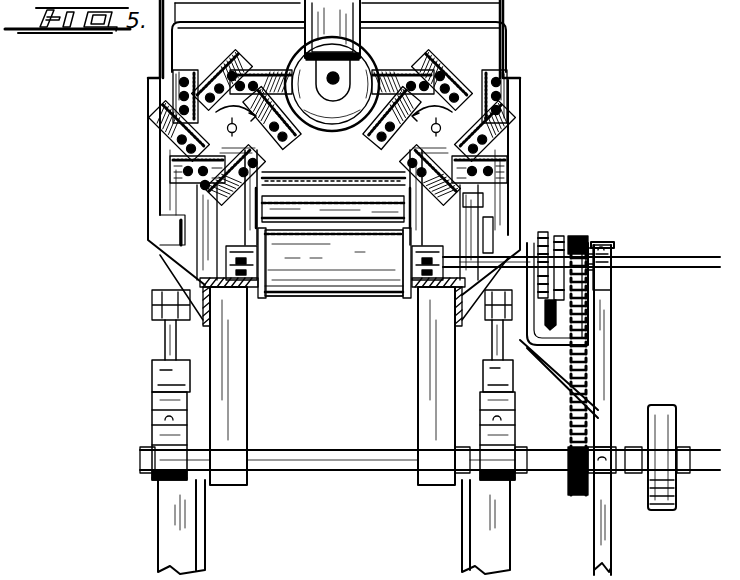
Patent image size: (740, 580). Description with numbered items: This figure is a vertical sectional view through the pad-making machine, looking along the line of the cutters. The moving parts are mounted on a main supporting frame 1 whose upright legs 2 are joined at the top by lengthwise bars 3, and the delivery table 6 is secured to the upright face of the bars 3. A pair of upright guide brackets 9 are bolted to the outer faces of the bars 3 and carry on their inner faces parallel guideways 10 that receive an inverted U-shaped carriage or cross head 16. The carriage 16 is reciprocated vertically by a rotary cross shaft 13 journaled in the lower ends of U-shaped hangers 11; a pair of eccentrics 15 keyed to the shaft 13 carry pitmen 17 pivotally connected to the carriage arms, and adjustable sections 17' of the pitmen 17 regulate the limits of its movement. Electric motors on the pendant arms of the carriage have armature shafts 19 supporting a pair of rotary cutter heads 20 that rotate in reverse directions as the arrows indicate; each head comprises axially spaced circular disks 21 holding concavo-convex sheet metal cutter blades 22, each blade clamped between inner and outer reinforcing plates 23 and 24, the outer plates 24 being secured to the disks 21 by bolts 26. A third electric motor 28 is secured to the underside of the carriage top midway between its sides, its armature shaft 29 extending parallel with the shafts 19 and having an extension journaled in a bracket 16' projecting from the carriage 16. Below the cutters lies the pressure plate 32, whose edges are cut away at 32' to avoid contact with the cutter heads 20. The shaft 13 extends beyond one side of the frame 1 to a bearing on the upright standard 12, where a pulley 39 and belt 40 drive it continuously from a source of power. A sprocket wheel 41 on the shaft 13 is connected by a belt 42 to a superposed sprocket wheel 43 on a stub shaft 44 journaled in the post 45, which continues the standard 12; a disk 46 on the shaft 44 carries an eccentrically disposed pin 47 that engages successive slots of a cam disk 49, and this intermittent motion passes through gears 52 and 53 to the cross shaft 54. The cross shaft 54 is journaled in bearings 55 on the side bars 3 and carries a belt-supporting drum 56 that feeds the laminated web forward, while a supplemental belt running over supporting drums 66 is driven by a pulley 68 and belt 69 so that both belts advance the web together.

The main supporting frame 1 is at (165, 325).
The upright legs 2 is at (500, 526).
The lengthwise bars 3 is at (436, 290).
The delivery table 6 is at (352, 240).
The upright guide brackets 9 is at (520, 192).
The guideways 10 is at (675, 262).
The U-shaped hangers 11 is at (418, 407).
The upright standard 12 is at (612, 545).
The rotary cross shaft 13 is at (333, 452).
The eccentrics 15 is at (515, 422).
The carriage or cross head 16 is at (341, 39).
The bracket 16' is at (332, 30).
The pitmen 17 is at (334, 373).
The adjustable sections 17' is at (317, 296).
The armature shafts 19 is at (446, 128).
The rotary cutter heads 20 is at (508, 100).
The circular disks 21 is at (334, 143).
The cutter blades 22 is at (432, 58).
The inner clamping and reinforcing plates 23 is at (500, 150).
The outer clamping and reinforcing plates 24 is at (334, 120).
The bolts 26 is at (205, 190).
The third electric motor 28 is at (332, 131).
The armature shaft 29 is at (333, 84).
The pressure plate 32 is at (333, 200).
The cut-away portions 32' is at (333, 203).
The pulley 39 is at (676, 470).
The belt 40 is at (676, 443).
The sprocket wheel 41 is at (575, 498).
The belt 42 is at (571, 415).
The superposed sprocket wheel 43 is at (590, 248).
The stub shaft 44 is at (590, 268).
The post 45 is at (606, 298).
The disk 46 is at (578, 236).
The pin 47 is at (560, 236).
The cam disk 49 is at (560, 315).
The gear 52 is at (552, 326).
The gear 53 is at (545, 230).
The cross shaft 54 is at (478, 285).
The bearings 55 is at (428, 246).
The belt-supporting drum 56 is at (330, 300).
The supporting drums 66 is at (356, 177).
The pulley 68 is at (483, 200).
The belt 69 is at (490, 222).